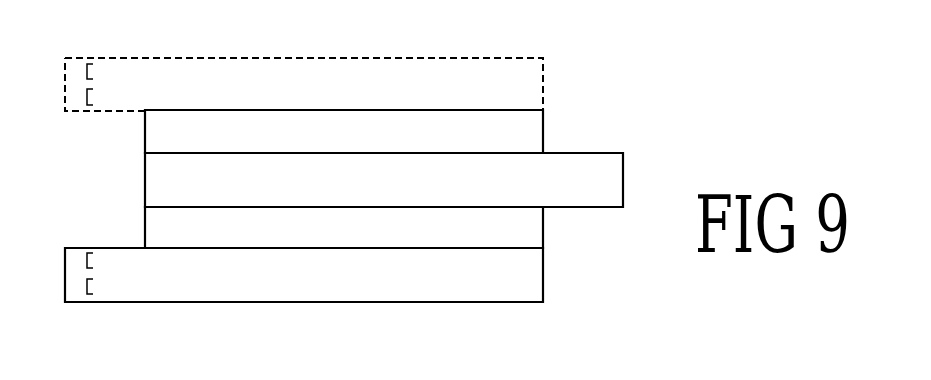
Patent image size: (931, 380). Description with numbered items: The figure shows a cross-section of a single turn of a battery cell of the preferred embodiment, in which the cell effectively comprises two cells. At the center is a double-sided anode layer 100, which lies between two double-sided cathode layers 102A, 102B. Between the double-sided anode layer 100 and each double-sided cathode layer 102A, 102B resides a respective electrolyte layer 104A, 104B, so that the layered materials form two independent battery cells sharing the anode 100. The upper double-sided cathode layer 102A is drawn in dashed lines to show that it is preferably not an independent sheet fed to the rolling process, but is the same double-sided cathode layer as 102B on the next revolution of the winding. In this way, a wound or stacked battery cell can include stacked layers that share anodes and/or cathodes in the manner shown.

The double-sided anode layer 100 is at (620, 188).
The upper double-sided cathode layer 102A is at (535, 73).
The double-sided cathode layer 102B is at (530, 286).
The electrolyte layer 104A is at (530, 138).
The electrolyte layer 104B is at (530, 229).